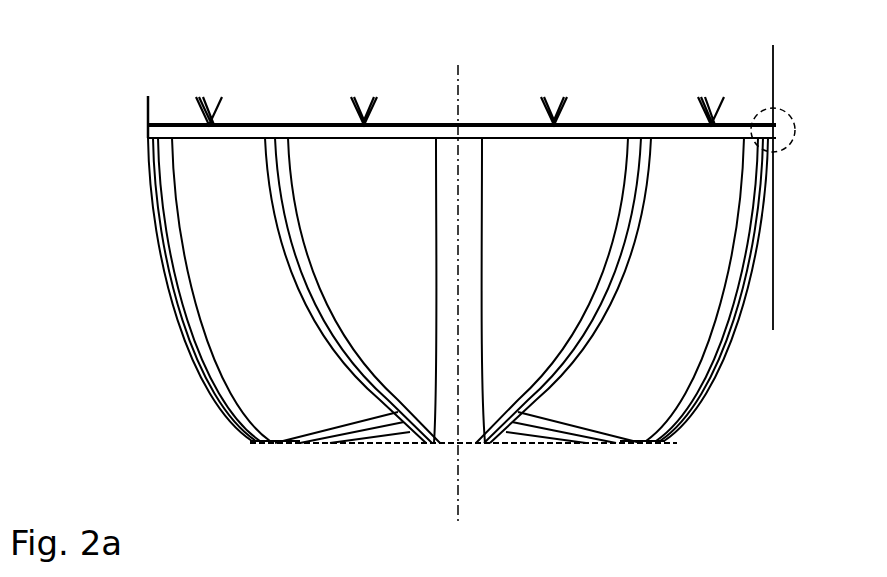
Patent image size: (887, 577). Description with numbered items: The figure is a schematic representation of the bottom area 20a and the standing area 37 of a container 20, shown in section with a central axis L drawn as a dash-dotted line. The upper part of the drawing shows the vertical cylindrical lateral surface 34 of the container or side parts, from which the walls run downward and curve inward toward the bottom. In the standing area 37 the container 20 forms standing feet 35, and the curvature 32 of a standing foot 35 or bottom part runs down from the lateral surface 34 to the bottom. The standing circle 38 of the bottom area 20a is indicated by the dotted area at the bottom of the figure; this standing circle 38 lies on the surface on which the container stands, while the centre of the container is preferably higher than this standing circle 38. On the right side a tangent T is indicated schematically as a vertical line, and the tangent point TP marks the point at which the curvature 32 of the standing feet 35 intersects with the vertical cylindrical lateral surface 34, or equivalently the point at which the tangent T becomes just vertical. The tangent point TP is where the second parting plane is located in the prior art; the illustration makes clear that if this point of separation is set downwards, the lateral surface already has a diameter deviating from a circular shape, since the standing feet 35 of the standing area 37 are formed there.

The container 20 is at (400, 294).
The bottom area 20a is at (221, 330).
The curvature 32 is at (705, 382).
The vertical cylindrical lateral surface 34 is at (731, 130).
The standing feet 35 is at (257, 406).
The standing area 37 is at (688, 473).
The standing circle 38 is at (402, 445).
The longitudinal axis L is at (461, 90).
The tangent T is at (771, 180).
The tangent point TP is at (786, 127).